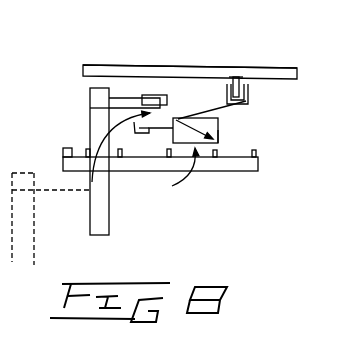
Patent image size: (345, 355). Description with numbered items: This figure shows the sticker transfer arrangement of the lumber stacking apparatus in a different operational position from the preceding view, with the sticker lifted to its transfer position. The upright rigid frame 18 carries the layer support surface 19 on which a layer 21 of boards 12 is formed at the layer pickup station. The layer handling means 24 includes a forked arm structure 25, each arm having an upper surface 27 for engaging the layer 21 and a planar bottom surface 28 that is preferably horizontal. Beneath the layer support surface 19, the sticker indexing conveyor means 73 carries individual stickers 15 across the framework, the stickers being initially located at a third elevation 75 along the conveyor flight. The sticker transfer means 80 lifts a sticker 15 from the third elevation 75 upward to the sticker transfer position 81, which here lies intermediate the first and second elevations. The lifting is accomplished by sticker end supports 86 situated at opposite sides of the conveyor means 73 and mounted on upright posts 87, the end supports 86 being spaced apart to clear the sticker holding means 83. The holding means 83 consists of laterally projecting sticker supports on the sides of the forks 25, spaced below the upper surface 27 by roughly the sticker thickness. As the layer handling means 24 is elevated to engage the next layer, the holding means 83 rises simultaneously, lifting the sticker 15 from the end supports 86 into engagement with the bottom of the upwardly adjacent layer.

The boards 12 is at (304, 74).
The layer of boards 21 is at (179, 66).
The layer support surface 19 is at (240, 83).
The upper surface 27 is at (248, 102).
The upright rigid frame 18 is at (247, 103).
The sticker transfer means 80 is at (113, 227).
The sticker transfer position 81 is at (126, 99).
The stickers 15 is at (159, 120).
The sticker holding means 83 is at (195, 121).
The forked arm structure 25 is at (219, 140).
The planar bottom surface 28 is at (168, 142).
The third elevation 75 is at (79, 147).
The layer handling means 24 is at (172, 173).
The sticker indexing conveyor means 73 is at (229, 177).
The sticker end supports 86 is at (76, 199).
The upright posts 87 is at (41, 246).